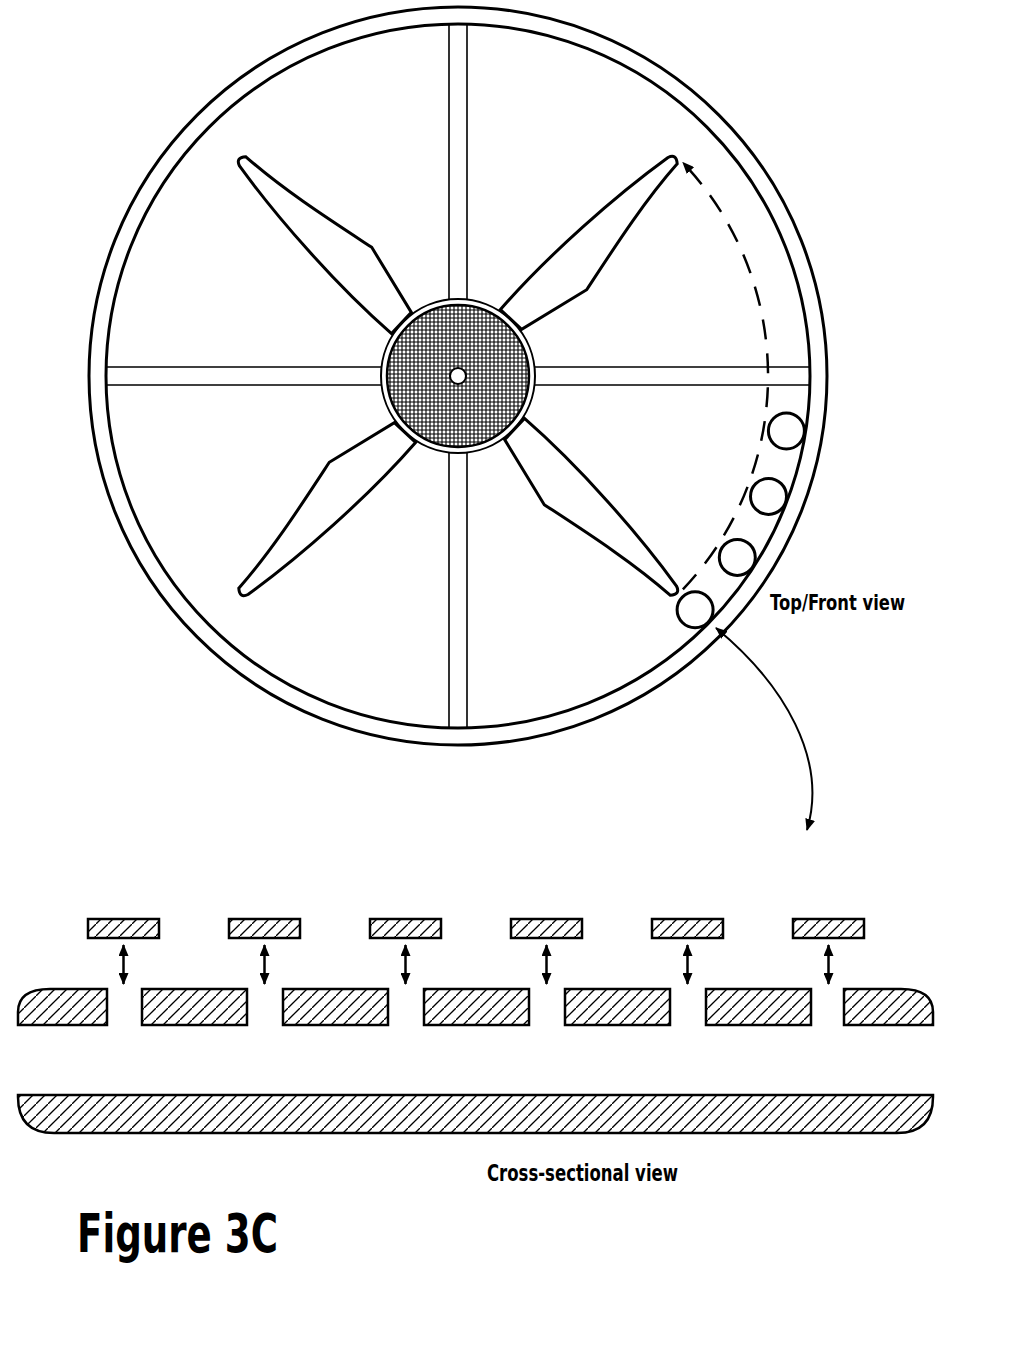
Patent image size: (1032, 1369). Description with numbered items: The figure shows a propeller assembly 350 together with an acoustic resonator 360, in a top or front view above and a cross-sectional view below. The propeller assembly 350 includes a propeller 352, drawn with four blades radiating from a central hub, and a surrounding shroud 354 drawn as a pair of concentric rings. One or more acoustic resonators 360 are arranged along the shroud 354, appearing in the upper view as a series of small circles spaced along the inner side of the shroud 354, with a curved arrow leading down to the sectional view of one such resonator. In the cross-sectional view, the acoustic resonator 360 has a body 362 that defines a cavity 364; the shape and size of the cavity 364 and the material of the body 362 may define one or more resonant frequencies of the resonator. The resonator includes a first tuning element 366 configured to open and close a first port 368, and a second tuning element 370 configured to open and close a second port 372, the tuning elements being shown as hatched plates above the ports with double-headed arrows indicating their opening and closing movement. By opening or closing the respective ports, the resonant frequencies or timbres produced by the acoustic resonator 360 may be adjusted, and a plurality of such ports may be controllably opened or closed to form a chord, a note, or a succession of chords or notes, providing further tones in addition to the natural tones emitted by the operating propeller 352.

The propeller assembly 350 is at (796, 92).
The propeller 352 is at (588, 212).
The shroud 354 is at (827, 323).
The acoustic resonator 360 is at (798, 419).
The body 362 is at (840, 1134).
The cavity 364 is at (868, 1067).
The first tuning element 366 is at (117, 918).
The first port 368 is at (112, 982).
The second tuning element 370 is at (537, 918).
The second port 372 is at (532, 983).